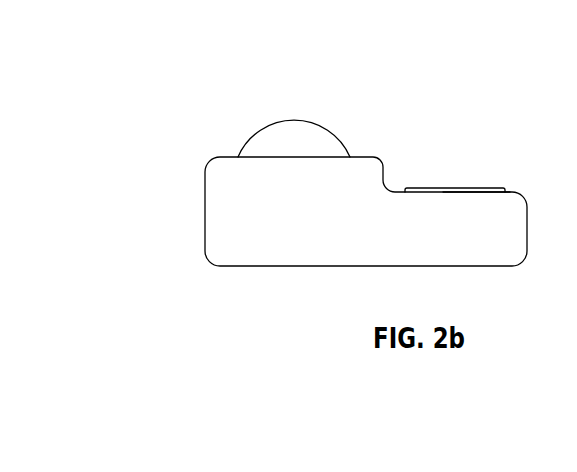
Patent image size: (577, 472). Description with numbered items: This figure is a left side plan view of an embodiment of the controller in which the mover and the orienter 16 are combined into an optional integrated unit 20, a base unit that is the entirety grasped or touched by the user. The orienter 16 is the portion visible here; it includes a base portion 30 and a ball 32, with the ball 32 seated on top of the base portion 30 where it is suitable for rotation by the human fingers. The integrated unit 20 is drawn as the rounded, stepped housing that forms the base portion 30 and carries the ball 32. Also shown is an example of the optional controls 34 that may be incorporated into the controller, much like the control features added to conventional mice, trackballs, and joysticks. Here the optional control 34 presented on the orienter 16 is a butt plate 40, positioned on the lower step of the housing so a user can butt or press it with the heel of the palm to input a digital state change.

The orienter 16 is at (412, 130).
The integrated unit 20 is at (488, 238).
The base portion 30 is at (222, 209).
The ball 32 is at (295, 137).
The optional controls 34 is at (443, 189).
The butt plate 40 is at (494, 189).